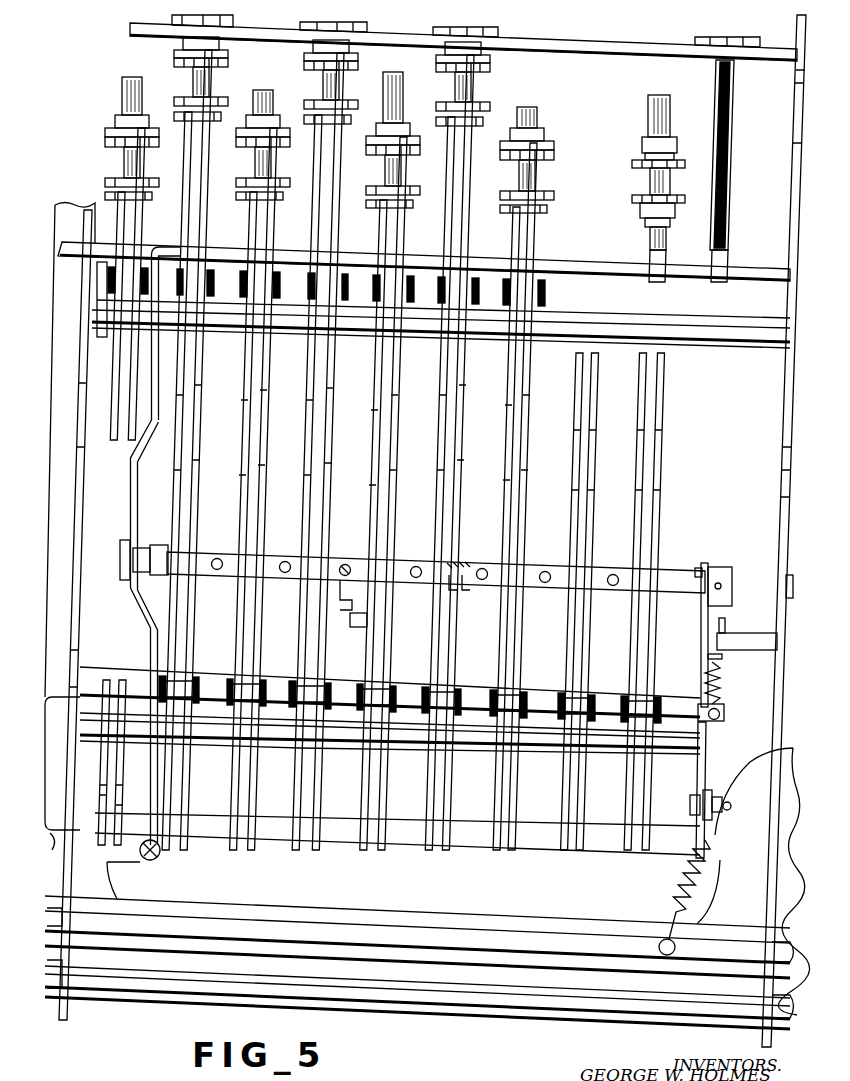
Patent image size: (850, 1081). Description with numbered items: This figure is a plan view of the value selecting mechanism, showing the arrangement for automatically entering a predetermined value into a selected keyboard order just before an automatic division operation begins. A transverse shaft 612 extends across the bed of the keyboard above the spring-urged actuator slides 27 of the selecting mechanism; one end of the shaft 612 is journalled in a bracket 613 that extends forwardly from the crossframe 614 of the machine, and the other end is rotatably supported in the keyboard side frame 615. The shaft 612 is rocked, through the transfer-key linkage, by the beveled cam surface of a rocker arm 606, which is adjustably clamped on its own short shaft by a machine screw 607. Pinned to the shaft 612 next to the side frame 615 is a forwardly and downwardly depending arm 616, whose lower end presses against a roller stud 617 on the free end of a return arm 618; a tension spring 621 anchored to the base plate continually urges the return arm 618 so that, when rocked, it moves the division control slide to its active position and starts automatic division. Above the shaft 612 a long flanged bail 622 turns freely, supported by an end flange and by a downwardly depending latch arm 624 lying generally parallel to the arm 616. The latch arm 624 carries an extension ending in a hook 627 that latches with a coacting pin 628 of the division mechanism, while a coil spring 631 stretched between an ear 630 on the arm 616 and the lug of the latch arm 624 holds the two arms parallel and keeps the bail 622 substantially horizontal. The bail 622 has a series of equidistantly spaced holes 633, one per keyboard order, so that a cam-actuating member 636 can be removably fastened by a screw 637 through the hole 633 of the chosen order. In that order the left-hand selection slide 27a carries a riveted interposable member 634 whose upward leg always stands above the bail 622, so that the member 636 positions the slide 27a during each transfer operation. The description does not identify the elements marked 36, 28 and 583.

The crossframe 614 is at (160, 250).
The type bar 36 is at (392, 102).
The type bar guide 28 is at (416, 152).
The actuator slide 27 is at (396, 418).
The left-hand selection slide 27a is at (376, 442).
The bracket 613 is at (134, 514).
The holes 633 is at (286, 561).
The screw 637 is at (344, 564).
The flanged bail 622 is at (556, 573).
The keyboard side frame 615 is at (781, 543).
The shaft 612 is at (751, 588).
The rocker arm 606 is at (150, 641).
The cam-actuating member 636 is at (347, 600).
The interposable member 634 is at (360, 628).
The hook 627 is at (722, 634).
The latch arm 624 is at (700, 675).
The pin 628 is at (722, 650).
The coil spring 631 is at (721, 686).
The ear 630 is at (719, 721).
The arm 616 is at (704, 790).
The return arm 618 is at (745, 778).
The roller stud 617 is at (700, 812).
The machine screw 607 is at (162, 862).
The tension spring 621 is at (680, 896).
The shaft 583 is at (496, 997).